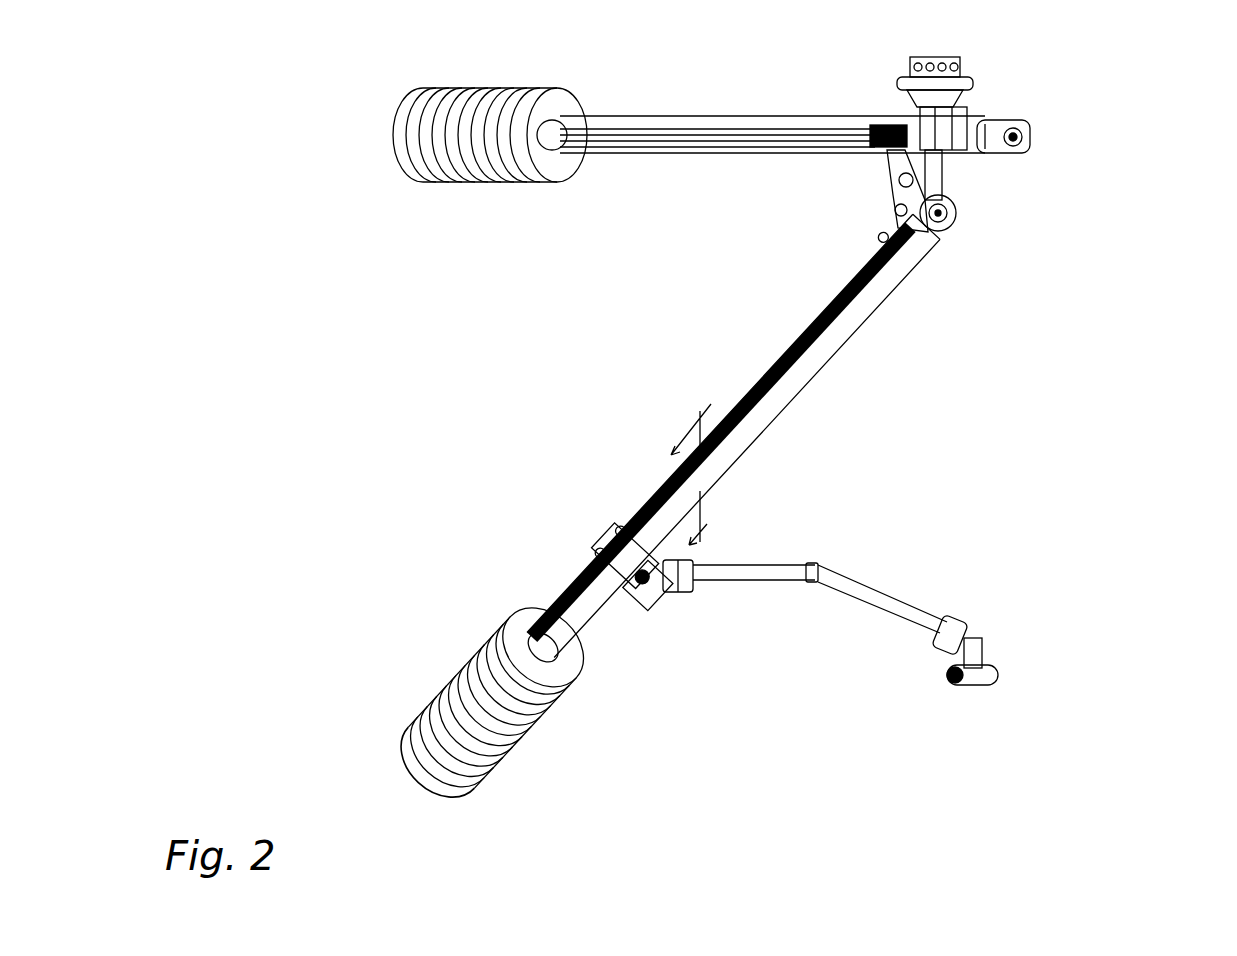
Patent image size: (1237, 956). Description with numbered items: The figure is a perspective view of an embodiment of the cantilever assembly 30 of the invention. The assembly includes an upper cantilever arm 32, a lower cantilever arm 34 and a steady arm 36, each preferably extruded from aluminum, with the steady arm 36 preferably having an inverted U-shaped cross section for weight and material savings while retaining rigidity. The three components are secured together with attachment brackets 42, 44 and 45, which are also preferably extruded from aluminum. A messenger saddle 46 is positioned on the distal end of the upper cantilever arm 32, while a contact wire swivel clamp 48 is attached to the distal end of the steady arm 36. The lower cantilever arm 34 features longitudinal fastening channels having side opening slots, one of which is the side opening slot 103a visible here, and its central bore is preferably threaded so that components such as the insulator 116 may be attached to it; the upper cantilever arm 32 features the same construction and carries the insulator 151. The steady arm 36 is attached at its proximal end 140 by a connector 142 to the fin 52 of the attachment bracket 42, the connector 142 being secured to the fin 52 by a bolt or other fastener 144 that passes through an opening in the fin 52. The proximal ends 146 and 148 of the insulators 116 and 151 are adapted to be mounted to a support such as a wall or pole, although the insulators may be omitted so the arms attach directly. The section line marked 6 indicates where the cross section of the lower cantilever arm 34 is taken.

The cantilever assembly 30 is at (1172, 67).
The upper cantilever arm 32 is at (735, 153).
The lower cantilever arm 34 is at (793, 405).
The steady arm 36 is at (867, 600).
The attachment bracket 42 is at (613, 545).
The attachment bracket 44 is at (893, 168).
The attachment bracket 45 is at (958, 198).
The messenger saddle 46 is at (960, 80).
The contact wire swivel clamp 48 is at (990, 663).
The fin 52 is at (656, 611).
The section line 6 is at (695, 470).
The side opening slot 103a is at (751, 425).
The insulator 116 is at (530, 737).
The proximal end 140 is at (711, 567).
The connector 142 is at (685, 593).
The fastener 144 is at (622, 600).
The proximal end 146 is at (423, 787).
The proximal end 148 is at (390, 138).
The insulator 151 is at (472, 180).